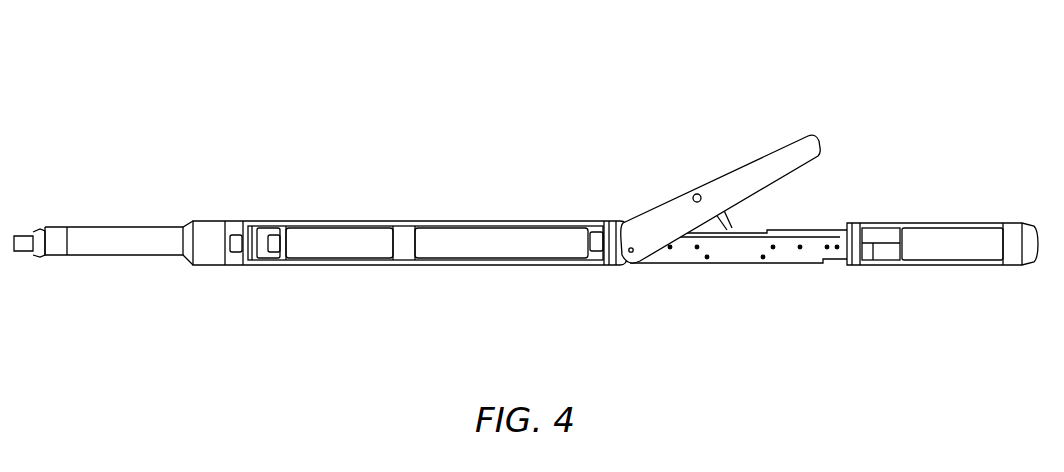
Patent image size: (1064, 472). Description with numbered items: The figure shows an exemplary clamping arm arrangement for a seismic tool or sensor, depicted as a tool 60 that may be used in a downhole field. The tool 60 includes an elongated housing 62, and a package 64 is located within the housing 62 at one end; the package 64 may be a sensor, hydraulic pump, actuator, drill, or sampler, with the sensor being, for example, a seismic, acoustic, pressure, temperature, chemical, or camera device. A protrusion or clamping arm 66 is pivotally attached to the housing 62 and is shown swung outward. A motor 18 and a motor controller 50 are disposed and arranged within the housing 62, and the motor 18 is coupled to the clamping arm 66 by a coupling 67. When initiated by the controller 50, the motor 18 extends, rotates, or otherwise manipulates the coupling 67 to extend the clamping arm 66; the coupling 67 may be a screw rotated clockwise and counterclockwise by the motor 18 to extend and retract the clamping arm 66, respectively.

The tool 60 is at (574, 86).
The housing 62 is at (328, 209).
The motor 18 is at (508, 220).
The coupling 67 is at (597, 225).
The motor controller 50 is at (334, 276).
The clamping arm 66 is at (757, 151).
The package 64 is at (920, 222).